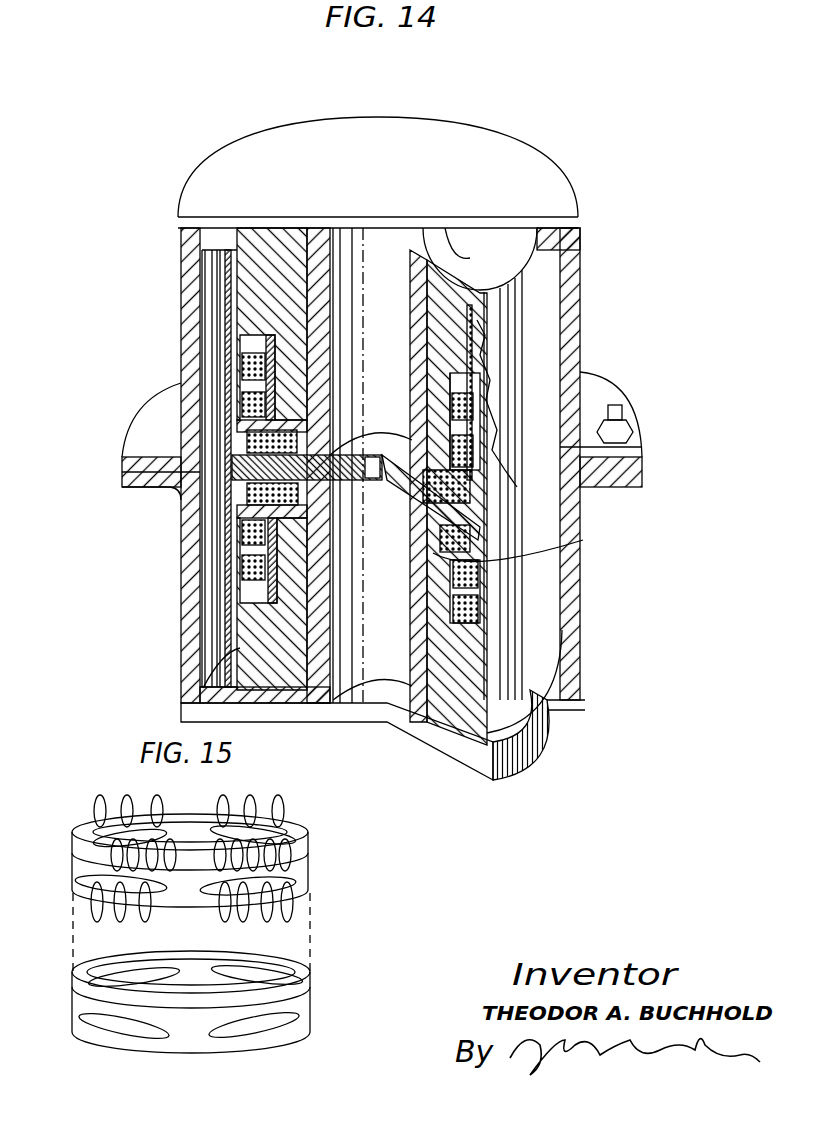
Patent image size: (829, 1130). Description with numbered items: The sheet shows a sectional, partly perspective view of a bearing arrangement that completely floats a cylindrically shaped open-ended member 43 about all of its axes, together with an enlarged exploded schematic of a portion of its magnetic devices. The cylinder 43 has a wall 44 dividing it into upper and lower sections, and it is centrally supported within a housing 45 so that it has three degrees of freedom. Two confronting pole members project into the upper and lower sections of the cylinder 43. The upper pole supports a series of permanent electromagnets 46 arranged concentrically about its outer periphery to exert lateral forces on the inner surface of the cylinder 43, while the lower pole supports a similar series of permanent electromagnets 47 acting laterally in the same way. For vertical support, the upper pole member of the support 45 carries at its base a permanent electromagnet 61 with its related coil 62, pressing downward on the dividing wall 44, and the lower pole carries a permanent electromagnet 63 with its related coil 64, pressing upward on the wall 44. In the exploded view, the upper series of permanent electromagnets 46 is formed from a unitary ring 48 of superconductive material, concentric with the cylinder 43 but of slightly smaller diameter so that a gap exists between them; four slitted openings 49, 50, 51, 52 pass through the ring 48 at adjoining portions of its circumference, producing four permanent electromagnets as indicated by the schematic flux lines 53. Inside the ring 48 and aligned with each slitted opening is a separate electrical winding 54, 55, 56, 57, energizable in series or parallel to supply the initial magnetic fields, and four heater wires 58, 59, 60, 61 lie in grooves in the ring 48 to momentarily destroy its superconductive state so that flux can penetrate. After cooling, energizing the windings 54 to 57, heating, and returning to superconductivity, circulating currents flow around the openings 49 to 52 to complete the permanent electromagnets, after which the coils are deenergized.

In FIG. 14, the cylindrically shaped open-ended member 43 is at (510, 315).
In FIG. 14, the wall 44 is at (235, 477).
In FIG. 14, the housing 45 is at (513, 160).
In FIG. 14, the permanent electromagnets 46 is at (245, 355).
In FIG. 15, the permanent electromagnets 46 is at (308, 875).
In FIG. 14, the permanent electromagnets 47 is at (477, 407).
In FIG. 15, the ring 48 is at (192, 820).
In FIG. 15, the slitted opening 49 is at (103, 840).
In FIG. 15, the slitted opening 50 is at (88, 883).
In FIG. 14, the slitted opening 51 is at (483, 590).
In FIG. 15, the slitted opening 51 is at (253, 920).
In FIG. 15, the slitted opening 52 is at (293, 840).
In FIG. 15, the schematic flux lines 53 is at (275, 923).
In FIG. 15, the electrical winding 54 is at (120, 977).
In FIG. 15, the electrical winding 55 is at (77, 1017).
In FIG. 15, the electrical winding 56 is at (287, 1020).
In FIG. 15, the electrical winding 57 is at (313, 973).
In FIG. 15, the heater wire 58 is at (122, 813).
In FIG. 15, the heater wire 59 is at (83, 900).
In FIG. 15, the heater wire 60 is at (215, 905).
In FIG. 14, the permanent electromagnet 61 is at (235, 438).
In FIG. 15, the permanent electromagnet 61 is at (253, 803).
In FIG. 14, the coil 62 is at (243, 447).
In FIG. 14, the permanent electromagnet 63 is at (237, 490).
In FIG. 14, the coil 64 is at (237, 538).